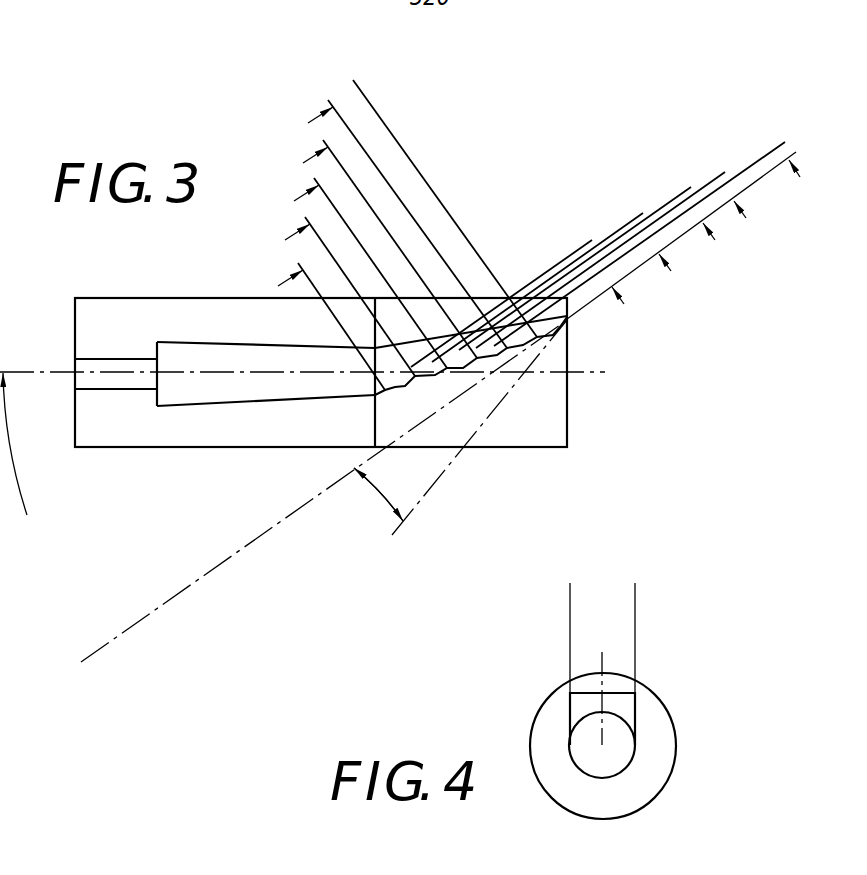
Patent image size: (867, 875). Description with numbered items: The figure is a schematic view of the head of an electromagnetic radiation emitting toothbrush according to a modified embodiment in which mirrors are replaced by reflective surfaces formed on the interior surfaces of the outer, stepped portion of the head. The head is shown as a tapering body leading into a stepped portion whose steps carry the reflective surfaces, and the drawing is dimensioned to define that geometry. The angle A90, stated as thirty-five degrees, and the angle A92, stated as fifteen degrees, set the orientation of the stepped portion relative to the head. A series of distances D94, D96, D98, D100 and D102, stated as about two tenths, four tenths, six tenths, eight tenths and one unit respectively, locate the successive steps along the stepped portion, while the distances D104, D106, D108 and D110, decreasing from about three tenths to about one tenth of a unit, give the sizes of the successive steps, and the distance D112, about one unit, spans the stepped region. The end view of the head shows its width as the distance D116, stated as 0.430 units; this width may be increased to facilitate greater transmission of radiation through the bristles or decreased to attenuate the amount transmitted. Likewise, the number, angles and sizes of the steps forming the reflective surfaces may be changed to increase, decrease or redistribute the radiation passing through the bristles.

In FIG. 3, the angle A90 is at (95, 648).
In FIG. 3, the angle A92 is at (451, 430).
In FIG. 3, the distance D94 is at (355, 80).
In FIG. 3, the distance D96 is at (378, 112).
In FIG. 3, the distance D98 is at (390, 130).
In FIG. 3, the distance D100 is at (405, 152).
In FIG. 3, the distance D102 is at (422, 176).
In FIG. 3, the distance D104 is at (586, 242).
In FIG. 3, the distance D106 is at (637, 215).
In FIG. 3, the distance D108 is at (686, 188).
In FIG. 3, the distance D110 is at (720, 173).
In FIG. 3, the distance D112 is at (778, 142).
In FIG. 4, the distance D116 is at (673, 595).